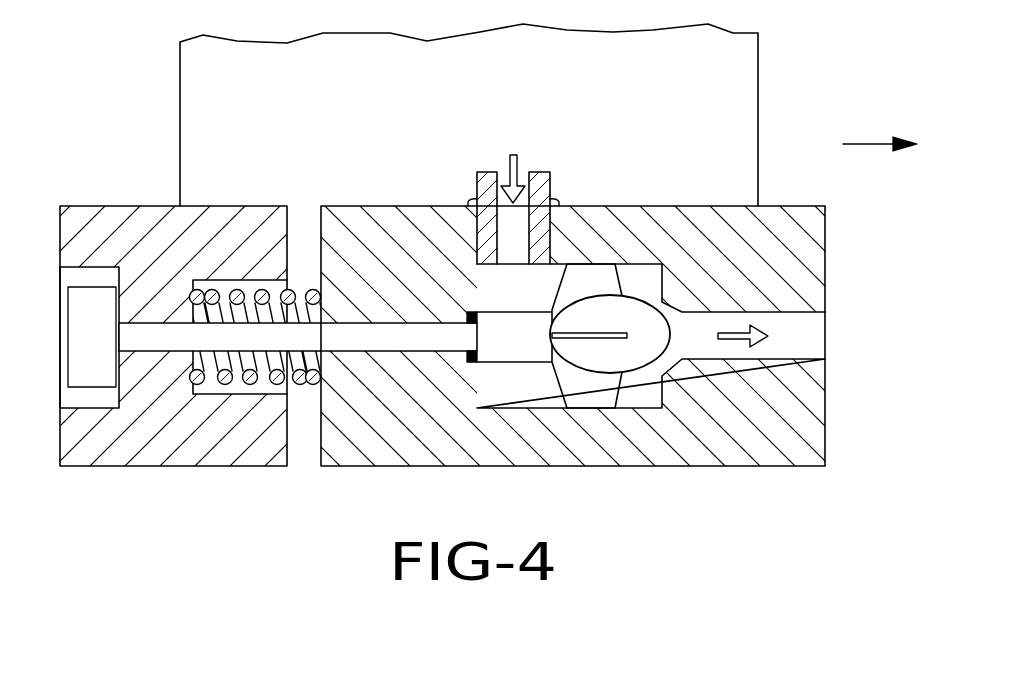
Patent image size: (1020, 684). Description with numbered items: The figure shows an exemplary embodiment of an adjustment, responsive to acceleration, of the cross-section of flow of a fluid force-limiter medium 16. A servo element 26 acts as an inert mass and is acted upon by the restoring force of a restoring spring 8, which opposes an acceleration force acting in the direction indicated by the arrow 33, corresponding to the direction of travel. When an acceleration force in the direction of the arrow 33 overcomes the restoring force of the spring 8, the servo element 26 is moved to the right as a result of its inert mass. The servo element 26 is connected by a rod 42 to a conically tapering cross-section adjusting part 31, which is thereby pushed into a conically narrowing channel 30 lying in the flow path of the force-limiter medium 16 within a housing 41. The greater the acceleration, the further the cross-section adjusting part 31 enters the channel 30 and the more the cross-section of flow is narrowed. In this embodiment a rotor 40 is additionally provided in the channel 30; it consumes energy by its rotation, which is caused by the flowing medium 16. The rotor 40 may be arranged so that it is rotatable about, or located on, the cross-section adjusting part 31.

The restoring spring 8 is at (311, 287).
The force-limiter medium 16 is at (527, 299).
The servo element 26 is at (148, 240).
The conically narrowing channel 30 is at (652, 293).
The cross-section adjusting part 31 is at (658, 342).
The arrow 33 is at (865, 144).
The rotor 40 is at (592, 390).
The housing 41 is at (793, 413).
The push rod 42 is at (400, 338).